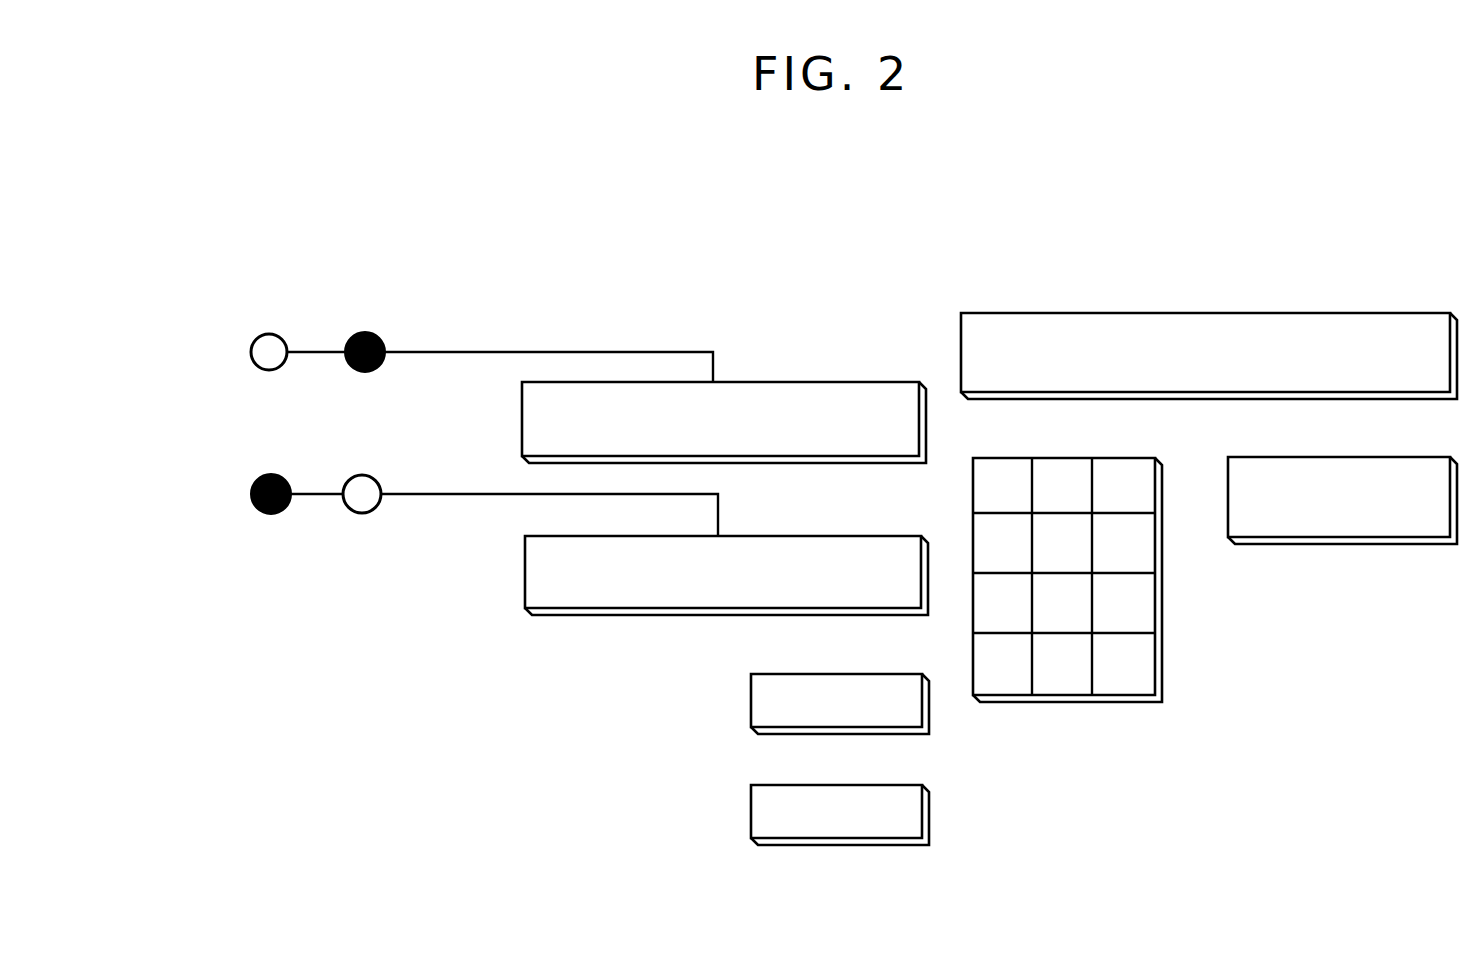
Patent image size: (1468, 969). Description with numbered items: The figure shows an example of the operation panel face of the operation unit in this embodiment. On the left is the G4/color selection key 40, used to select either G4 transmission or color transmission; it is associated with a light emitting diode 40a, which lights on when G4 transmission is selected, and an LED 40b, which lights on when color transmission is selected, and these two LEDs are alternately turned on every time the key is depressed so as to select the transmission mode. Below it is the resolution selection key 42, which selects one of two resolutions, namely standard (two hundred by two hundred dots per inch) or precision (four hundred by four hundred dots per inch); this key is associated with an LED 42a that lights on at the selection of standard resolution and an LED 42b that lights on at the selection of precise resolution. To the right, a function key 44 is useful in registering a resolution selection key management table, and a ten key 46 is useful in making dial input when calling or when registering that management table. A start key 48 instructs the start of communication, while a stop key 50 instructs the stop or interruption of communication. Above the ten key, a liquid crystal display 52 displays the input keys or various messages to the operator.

The G4/color selection key 40 is at (798, 382).
The light emitting diode 40a is at (281, 333).
The LED 40b is at (372, 335).
The resolution selection key 42 is at (786, 536).
The LED 42a is at (258, 478).
The LED 42b is at (373, 472).
The function key 44 is at (1362, 545).
The ten key 46 is at (1167, 652).
The start key 48 is at (751, 703).
The stop key 50 is at (750, 810).
The liquid crystal display 52 is at (1305, 313).